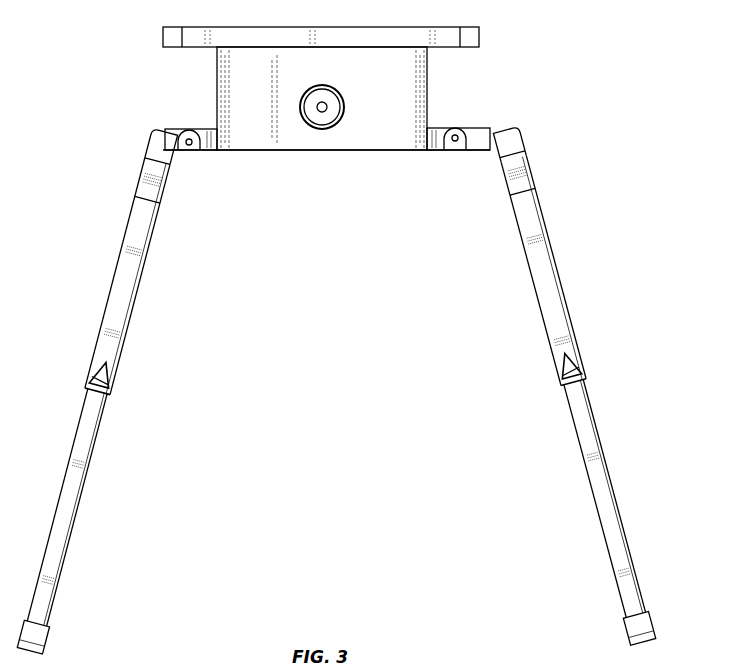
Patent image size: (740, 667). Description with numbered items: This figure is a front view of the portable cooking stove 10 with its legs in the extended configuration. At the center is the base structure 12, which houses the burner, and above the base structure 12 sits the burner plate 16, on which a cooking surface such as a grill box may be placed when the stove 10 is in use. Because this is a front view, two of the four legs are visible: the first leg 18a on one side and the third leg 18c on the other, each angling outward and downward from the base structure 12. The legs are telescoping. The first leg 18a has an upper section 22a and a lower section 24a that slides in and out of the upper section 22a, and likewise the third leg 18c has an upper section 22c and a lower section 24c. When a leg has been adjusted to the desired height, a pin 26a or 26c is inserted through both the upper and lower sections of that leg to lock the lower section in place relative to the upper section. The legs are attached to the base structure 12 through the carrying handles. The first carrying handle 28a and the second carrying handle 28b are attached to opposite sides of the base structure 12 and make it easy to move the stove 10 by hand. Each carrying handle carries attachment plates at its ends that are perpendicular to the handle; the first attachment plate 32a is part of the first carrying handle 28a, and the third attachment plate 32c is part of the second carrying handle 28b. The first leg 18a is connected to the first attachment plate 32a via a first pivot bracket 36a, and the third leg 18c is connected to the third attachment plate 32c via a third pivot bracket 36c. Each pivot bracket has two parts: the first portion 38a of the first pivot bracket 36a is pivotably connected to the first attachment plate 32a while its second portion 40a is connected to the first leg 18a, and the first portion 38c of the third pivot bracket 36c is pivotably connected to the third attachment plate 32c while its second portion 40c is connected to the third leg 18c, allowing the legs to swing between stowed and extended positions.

The stove 10 is at (560, 66).
The base structure 12 is at (322, 152).
The burner plate 16 is at (163, 37).
The first leg 18a is at (128, 376).
The third leg 18c is at (581, 372).
The upper section 22a is at (124, 246).
The upper section 22c is at (548, 242).
The lower section 24a is at (78, 514).
The lower section 24c is at (603, 511).
The pin 26a is at (113, 372).
The pin 26c is at (564, 364).
The first carrying handle 28a is at (173, 148).
The second carrying handle 28b is at (474, 143).
The first attachment plate 32a is at (208, 152).
The third attachment plate 32c is at (440, 142).
The first pivot bracket 36a is at (148, 134).
The third pivot bracket 36c is at (522, 130).
The first portion 38a is at (184, 152).
The first portion 38c is at (470, 142).
The second portion 40a is at (142, 172).
The second portion 40c is at (530, 170).